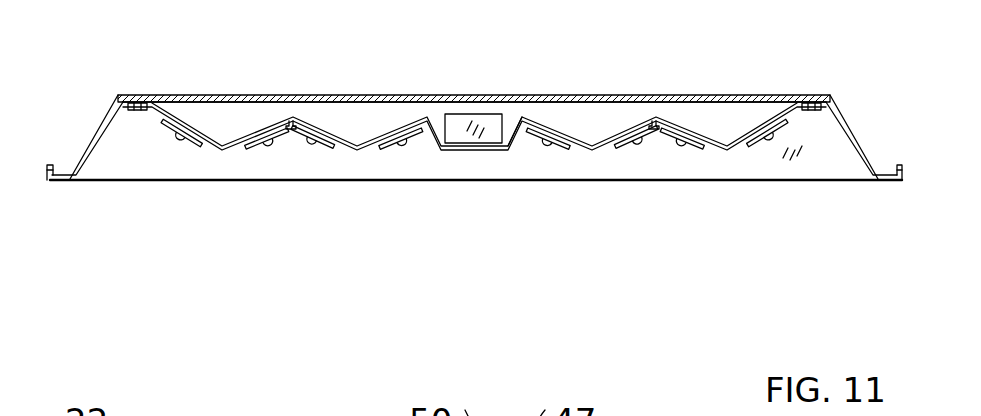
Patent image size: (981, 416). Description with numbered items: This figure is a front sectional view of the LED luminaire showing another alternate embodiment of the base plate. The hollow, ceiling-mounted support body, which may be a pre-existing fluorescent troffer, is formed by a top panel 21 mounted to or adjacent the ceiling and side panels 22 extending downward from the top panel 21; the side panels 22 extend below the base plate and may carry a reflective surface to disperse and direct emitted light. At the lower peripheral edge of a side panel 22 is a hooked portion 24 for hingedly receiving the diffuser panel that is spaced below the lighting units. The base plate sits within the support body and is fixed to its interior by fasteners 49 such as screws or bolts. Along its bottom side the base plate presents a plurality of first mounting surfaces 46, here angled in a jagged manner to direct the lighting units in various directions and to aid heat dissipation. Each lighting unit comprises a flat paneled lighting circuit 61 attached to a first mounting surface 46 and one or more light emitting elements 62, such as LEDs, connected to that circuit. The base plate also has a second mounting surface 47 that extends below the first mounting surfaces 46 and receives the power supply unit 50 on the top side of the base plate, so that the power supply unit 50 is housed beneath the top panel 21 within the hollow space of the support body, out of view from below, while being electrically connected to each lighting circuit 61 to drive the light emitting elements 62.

The top panel 21 is at (363, 97).
The side panels 22 is at (102, 117).
The hooked portion 24 is at (48, 182).
The first mounting surfaces 46 is at (595, 145).
The second mounting surface 47 is at (505, 128).
The fasteners 49 is at (808, 113).
The power supply unit 50 is at (458, 120).
The lighting circuit 61 is at (280, 137).
The light emitting elements 62 is at (262, 148).